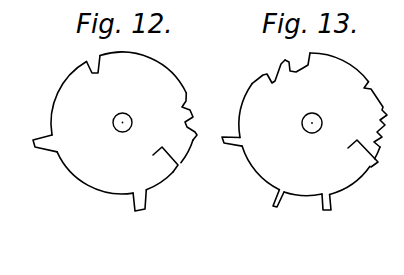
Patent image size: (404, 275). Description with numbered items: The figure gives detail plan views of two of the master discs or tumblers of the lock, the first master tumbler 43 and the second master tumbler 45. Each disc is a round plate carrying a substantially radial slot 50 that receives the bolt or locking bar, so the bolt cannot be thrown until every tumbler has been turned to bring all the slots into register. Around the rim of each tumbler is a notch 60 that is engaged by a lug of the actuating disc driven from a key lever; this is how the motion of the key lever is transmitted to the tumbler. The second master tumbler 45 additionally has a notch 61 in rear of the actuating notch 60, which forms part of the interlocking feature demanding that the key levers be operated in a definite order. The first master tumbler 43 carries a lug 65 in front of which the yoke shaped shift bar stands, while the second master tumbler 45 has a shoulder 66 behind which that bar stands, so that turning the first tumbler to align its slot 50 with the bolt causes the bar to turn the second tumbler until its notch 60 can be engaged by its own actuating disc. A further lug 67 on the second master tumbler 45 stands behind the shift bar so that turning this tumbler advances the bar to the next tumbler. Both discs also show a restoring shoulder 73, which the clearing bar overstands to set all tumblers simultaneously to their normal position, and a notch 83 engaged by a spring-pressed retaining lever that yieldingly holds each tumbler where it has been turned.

In FIG. 12, the first master tumbler 43 is at (163, 76).
In FIG. 13, the second master tumbler 45 is at (350, 78).
In FIG. 12, the radial slot 50 is at (177, 167).
In FIG. 13, the radial slot 50 is at (256, 76).
In FIG. 12, the notch 60 is at (92, 65).
In FIG. 13, the notch 61 is at (299, 60).
In FIG. 12, the lug 65 is at (133, 207).
In FIG. 13, the shoulder 66 is at (280, 196).
In FIG. 13, the lug 67 is at (318, 209).
In FIG. 12, the restoring shoulder 73 is at (41, 137).
In FIG. 13, the restoring shoulder 73 is at (229, 127).
In FIG. 12, the notch 83 is at (197, 134).
In FIG. 13, the notch 83 is at (383, 126).